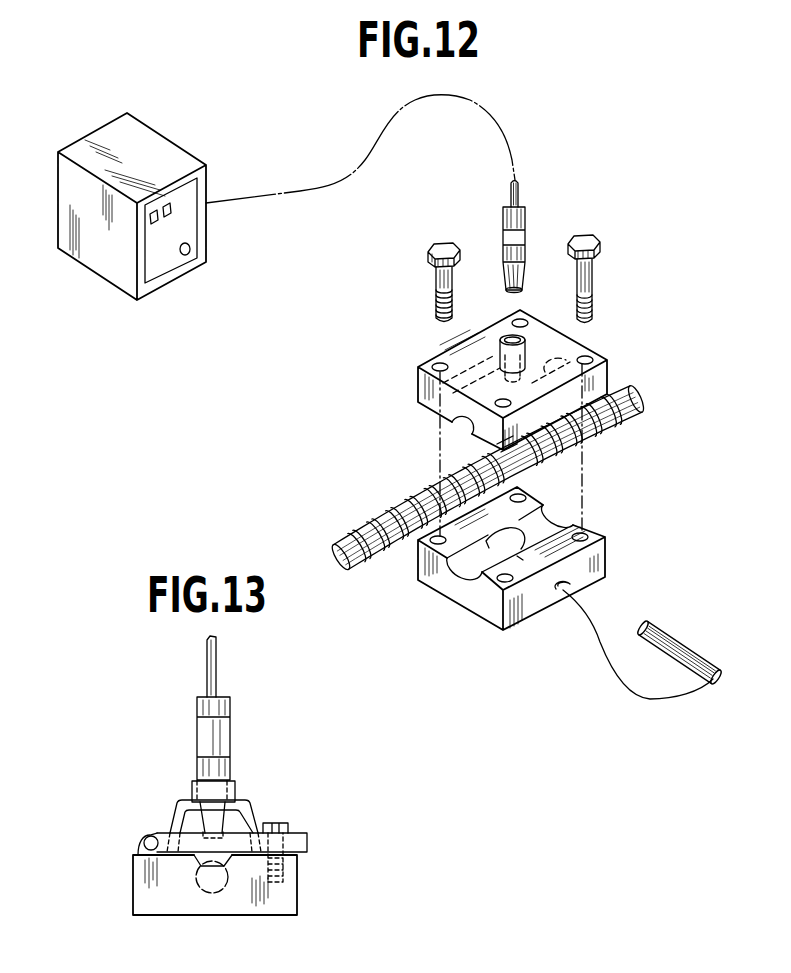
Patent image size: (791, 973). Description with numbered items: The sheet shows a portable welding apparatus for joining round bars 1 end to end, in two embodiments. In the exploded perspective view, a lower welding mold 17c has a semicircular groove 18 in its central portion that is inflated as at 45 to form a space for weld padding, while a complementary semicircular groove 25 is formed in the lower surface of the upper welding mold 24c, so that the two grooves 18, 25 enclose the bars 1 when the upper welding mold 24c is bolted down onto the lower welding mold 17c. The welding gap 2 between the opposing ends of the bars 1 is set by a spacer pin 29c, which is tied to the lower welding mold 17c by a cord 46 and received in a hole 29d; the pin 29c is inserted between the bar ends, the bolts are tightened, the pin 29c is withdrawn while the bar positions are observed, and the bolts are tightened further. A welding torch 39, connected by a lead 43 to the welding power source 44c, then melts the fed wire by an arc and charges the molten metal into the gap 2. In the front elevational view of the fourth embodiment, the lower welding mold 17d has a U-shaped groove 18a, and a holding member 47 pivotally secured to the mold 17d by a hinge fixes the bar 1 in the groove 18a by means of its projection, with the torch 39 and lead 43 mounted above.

In FIG. 12, the bar 1 is at (503, 478).
In FIG. 13, the bar 1 is at (233, 893).
In FIG. 12, the welding gap 2 is at (487, 461).
In FIG. 12, the lower welding mold 17c is at (534, 578).
In FIG. 13, the lower welding mold 17d is at (215, 914).
In FIG. 12, the semicircular groove 18 is at (453, 570).
In FIG. 13, the U-shaped groove 18a is at (213, 896).
In FIG. 12, the upper welding mold 24c is at (536, 380).
In FIG. 12, the semicircular groove 25 is at (455, 421).
In FIG. 12, the spacer pin 29c is at (663, 634).
In FIG. 12, the pin hole 29d is at (582, 536).
In FIG. 12, the welding torch 39 is at (525, 215).
In FIG. 13, the welding torch 39 is at (217, 730).
In FIG. 12, the lead wire 43 is at (502, 132).
In FIG. 13, the lead wire 43 is at (217, 678).
In FIG. 12, the welding power source 44c is at (186, 160).
In FIG. 12, the inflated portion of groove 45 is at (485, 543).
In FIG. 12, the cord 46 is at (598, 634).
In FIG. 13, the holding member 47 is at (293, 842).